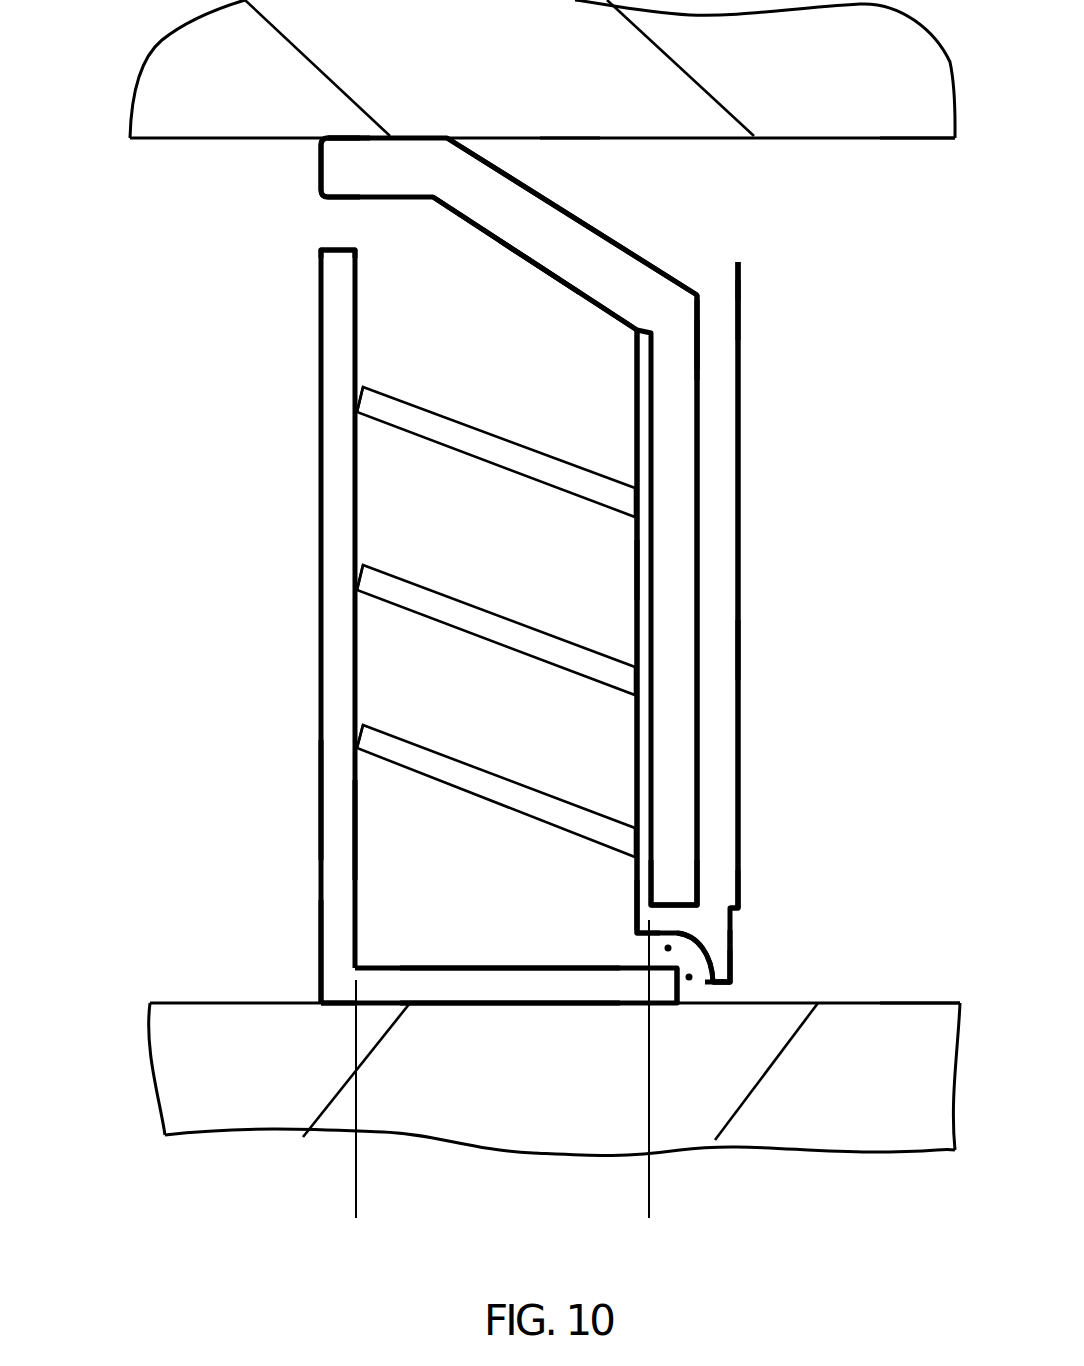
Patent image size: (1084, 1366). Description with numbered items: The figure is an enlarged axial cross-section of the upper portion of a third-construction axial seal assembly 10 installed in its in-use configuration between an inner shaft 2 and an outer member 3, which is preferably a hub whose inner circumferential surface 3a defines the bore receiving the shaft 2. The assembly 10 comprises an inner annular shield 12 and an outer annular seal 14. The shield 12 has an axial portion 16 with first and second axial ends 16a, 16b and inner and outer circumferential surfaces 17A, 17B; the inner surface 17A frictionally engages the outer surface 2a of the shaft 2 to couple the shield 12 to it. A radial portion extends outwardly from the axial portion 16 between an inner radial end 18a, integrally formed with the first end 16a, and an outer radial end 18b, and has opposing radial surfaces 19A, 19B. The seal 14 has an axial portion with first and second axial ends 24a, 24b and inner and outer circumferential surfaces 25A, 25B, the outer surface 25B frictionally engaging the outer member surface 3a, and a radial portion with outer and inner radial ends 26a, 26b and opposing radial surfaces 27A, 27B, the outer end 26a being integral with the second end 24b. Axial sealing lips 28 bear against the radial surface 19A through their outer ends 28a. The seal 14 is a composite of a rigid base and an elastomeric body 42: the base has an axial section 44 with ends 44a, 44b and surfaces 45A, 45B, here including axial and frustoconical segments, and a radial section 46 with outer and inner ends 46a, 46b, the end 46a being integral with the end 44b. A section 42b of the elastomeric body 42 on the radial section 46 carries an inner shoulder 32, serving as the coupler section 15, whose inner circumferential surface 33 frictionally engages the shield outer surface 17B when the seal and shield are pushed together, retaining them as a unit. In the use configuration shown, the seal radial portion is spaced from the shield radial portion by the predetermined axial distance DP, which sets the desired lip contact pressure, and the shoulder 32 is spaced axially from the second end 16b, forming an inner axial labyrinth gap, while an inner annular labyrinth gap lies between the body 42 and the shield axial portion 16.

The inner shaft 2 is at (533, 1038).
The outer surface of the shaft 2a is at (913, 1001).
The outer member 3 is at (498, 113).
The inner circumferential surface of the outer member 3a is at (912, 141).
The axial seal assembly 10 is at (483, 587).
The inner annular shield 12 is at (403, 626).
The outer annular seal 14 is at (544, 576).
The coupler section 15 is at (752, 972).
The axial portion of the shield 16 is at (497, 1009).
The first axial end of the shield axial portion 16a is at (340, 987).
The second axial end of the shield axial portion 16b is at (662, 994).
The inner circumferential surface of the shield axial portion 17A is at (443, 1005).
The outer circumferential surface of the shield axial portion 17B is at (445, 964).
The inner radial end of the shield radial portion 18a is at (333, 937).
The outer radial end of the shield radial portion 18b is at (334, 258).
The radial surface of the shield radial portion 19A is at (320, 803).
The opposing radial surface of the shield radial portion 19B is at (357, 822).
The first axial end of the seal axial portion 24a is at (319, 165).
The second axial end of the seal axial portion 24b is at (733, 233).
The inner circumferential surface of the seal axial portion 25A is at (528, 266).
The outer circumferential surface of the seal axial portion 25B is at (572, 135).
The outer radial end of the seal radial portion 26a is at (743, 305).
The inner radial end of the seal radial portion 26b is at (632, 909).
The radial surface of the seal radial portion 27A is at (633, 573).
The opposing radial surface of the seal radial portion 27B is at (743, 652).
The axial sealing lip 28 is at (513, 474).
The outer end of the axial sealing lip 28a is at (372, 397).
The inner shoulder 32 is at (731, 957).
The inner circumferential surface of the inner shoulder 33 is at (723, 981).
The annular elastomeric body 42 is at (743, 418).
The section of the elastomeric body 42b is at (720, 933).
The axial section of the rigid base 44 is at (590, 223).
The first axial end of the base axial section 44a is at (341, 148).
The second axial end of the base axial section 44b is at (725, 263).
The inner circumferential surface of the base axial section 45A is at (474, 231).
The outer circumferential surface of the base axial section 45B is at (618, 244).
The radial section of the rigid base 46 is at (702, 592).
The outer radial end of the base radial section 46a is at (682, 345).
The inner radial end of the base radial section 46b is at (688, 884).
The predetermined axial distance DP is at (358, 1202).